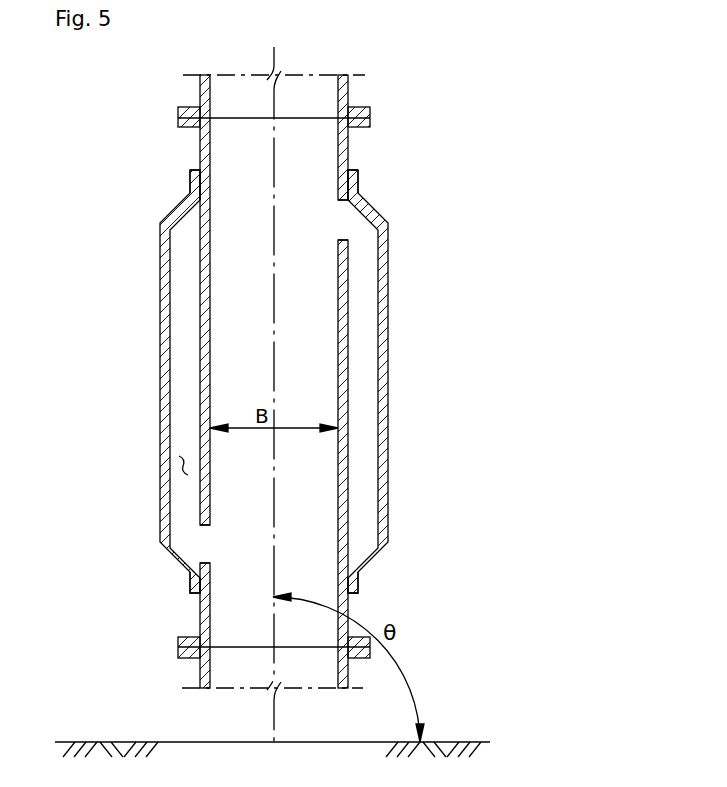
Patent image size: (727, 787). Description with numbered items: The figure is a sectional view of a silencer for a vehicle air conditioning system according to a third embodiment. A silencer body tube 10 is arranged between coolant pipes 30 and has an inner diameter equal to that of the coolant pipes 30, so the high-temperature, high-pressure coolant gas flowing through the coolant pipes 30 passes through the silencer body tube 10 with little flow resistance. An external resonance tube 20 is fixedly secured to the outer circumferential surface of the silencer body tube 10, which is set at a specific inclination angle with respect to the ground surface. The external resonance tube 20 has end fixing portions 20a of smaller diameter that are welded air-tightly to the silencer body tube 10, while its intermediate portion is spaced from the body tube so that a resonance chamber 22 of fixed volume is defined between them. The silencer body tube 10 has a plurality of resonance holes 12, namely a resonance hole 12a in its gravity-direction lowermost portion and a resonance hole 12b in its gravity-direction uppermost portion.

The silencer body tube 10 is at (200, 262).
The resonance holes 12 is at (277, 389).
The resonance hole 12a is at (203, 538).
The resonance hole 12b is at (343, 223).
The external resonance tube 20 is at (160, 370).
The end fixing portions 20a is at (190, 185).
The resonance chamber 22 is at (178, 465).
The coolant pipes 30 is at (201, 90).